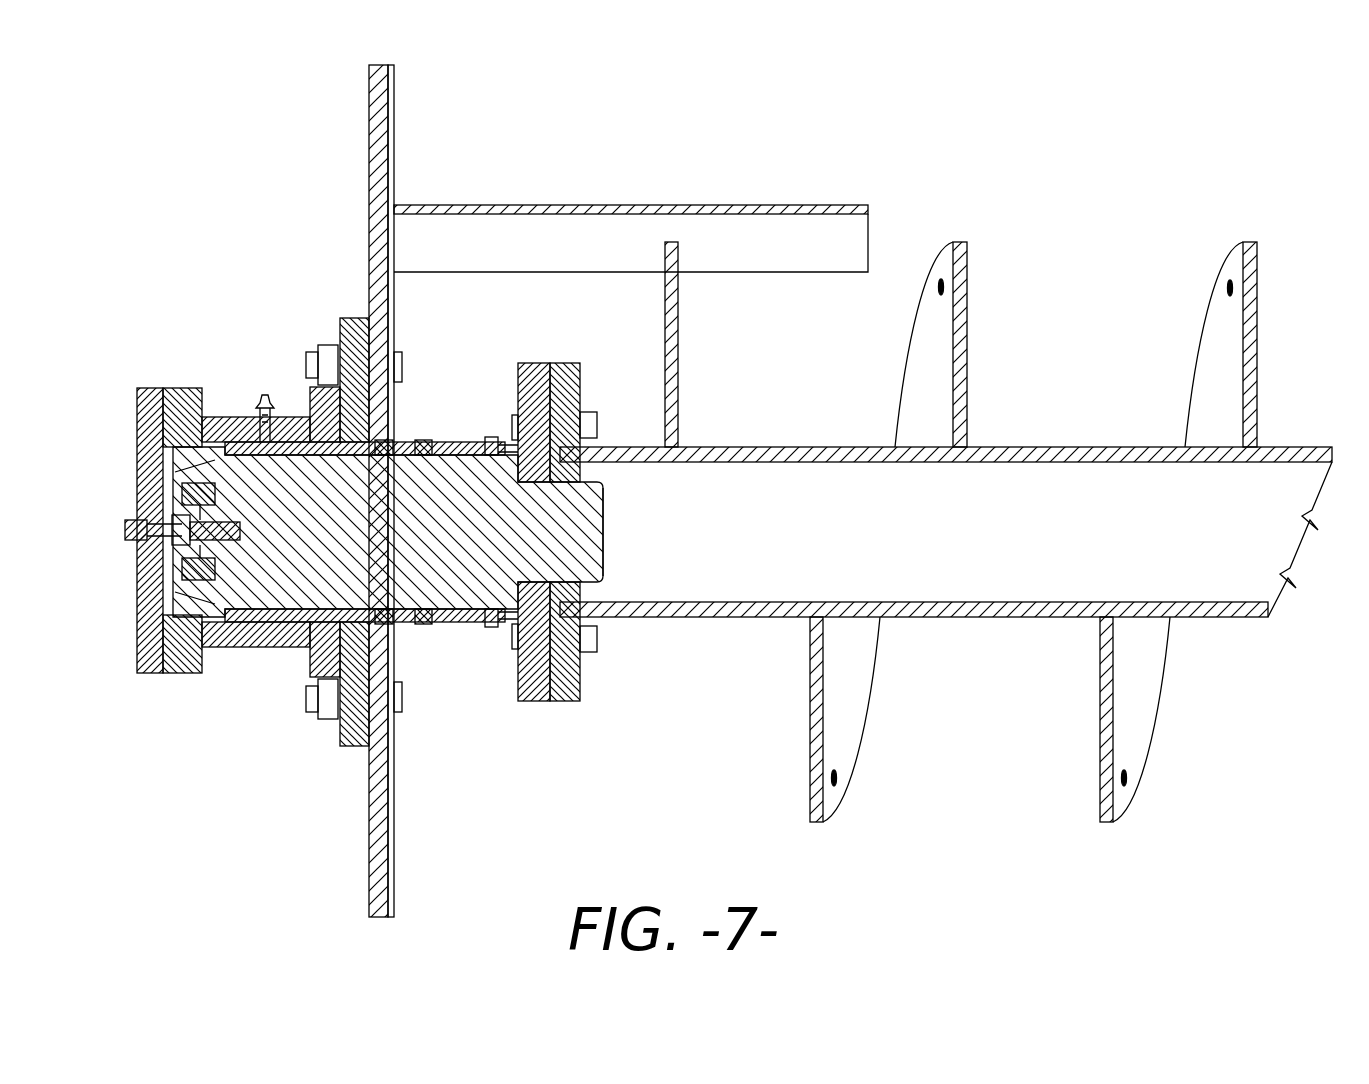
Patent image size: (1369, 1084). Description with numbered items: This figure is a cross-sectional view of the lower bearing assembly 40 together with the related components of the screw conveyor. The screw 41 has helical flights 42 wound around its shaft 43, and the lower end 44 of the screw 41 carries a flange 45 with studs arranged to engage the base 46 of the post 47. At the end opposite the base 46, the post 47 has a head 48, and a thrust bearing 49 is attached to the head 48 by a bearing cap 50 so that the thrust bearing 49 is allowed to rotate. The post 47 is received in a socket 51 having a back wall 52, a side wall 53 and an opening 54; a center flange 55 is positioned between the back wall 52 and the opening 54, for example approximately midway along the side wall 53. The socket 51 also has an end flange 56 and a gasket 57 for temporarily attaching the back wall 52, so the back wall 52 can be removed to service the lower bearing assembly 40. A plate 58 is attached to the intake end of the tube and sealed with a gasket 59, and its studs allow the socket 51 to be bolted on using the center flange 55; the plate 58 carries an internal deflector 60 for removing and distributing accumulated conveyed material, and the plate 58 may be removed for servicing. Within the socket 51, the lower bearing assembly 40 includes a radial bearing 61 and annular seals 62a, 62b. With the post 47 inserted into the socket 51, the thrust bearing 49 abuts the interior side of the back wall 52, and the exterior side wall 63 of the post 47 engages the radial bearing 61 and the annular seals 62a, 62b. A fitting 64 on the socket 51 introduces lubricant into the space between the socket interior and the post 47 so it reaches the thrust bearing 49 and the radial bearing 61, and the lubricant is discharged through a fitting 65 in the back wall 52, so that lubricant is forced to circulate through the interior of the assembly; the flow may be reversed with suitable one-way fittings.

The lower bearing assembly 40 is at (388, 532).
The screw 41 is at (1104, 442).
The helical flights 42 is at (1220, 340).
The shaft 43 is at (1020, 620).
The lower end 44 is at (647, 568).
The flange 45 is at (575, 670).
The base 46 is at (532, 372).
The post 47 is at (468, 482).
The head 48 is at (205, 468).
The thrust bearing 49 is at (178, 590).
The bearing cap 50 is at (180, 562).
The socket 51 is at (248, 650).
The back wall 52 is at (135, 445).
The side wall 53 is at (432, 652).
The opening 54 is at (480, 650).
The center flange 55 is at (315, 660).
The end flange 56 is at (186, 388).
The gasket 57 is at (162, 672).
The plate 58 is at (368, 172).
The gasket 59 is at (395, 108).
The internal deflector 60 is at (772, 238).
The radial bearing 61 is at (300, 443).
The annular seal 62a is at (412, 447).
The annular seal 62b is at (470, 480).
The exterior side wall 63 is at (350, 335).
The fitting 64 is at (290, 438).
The fitting 65 is at (130, 530).